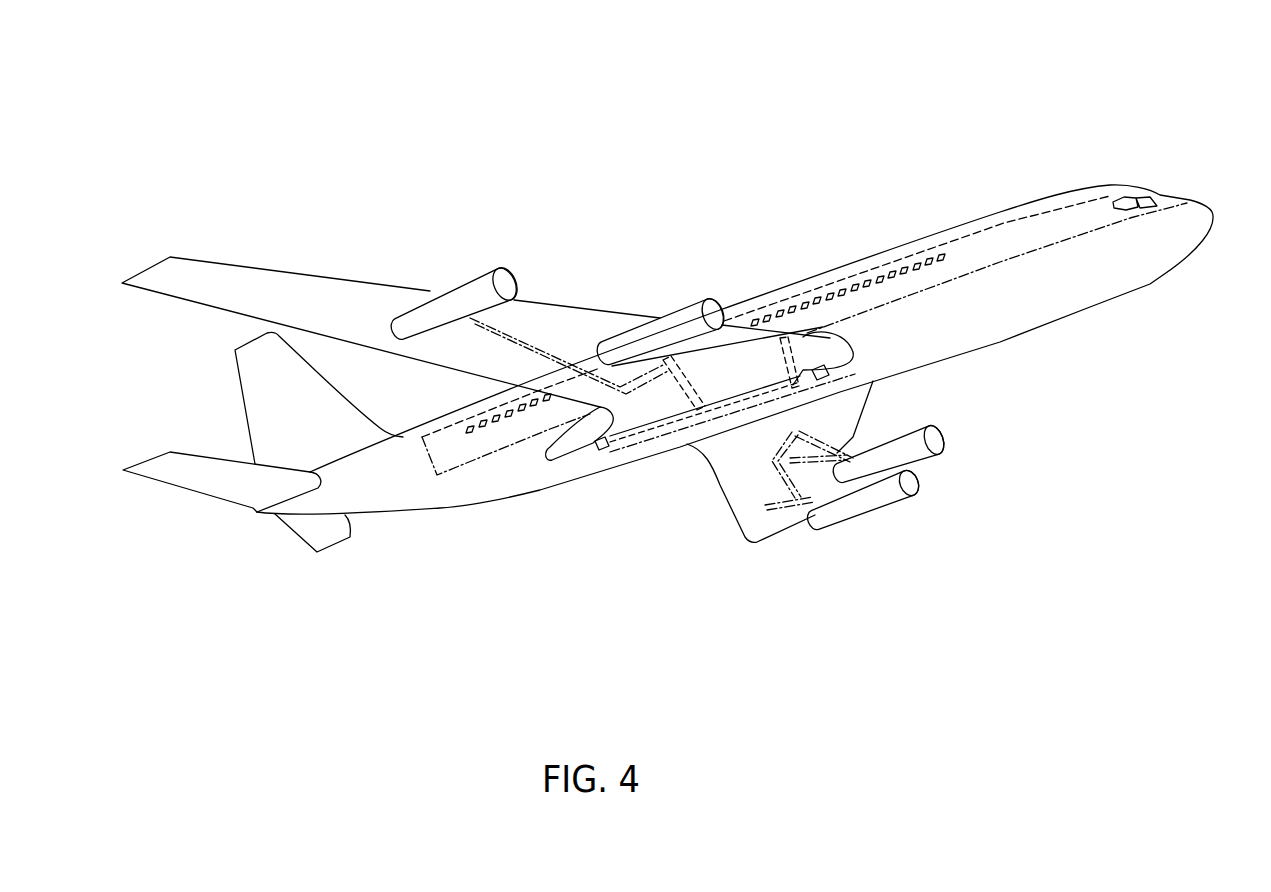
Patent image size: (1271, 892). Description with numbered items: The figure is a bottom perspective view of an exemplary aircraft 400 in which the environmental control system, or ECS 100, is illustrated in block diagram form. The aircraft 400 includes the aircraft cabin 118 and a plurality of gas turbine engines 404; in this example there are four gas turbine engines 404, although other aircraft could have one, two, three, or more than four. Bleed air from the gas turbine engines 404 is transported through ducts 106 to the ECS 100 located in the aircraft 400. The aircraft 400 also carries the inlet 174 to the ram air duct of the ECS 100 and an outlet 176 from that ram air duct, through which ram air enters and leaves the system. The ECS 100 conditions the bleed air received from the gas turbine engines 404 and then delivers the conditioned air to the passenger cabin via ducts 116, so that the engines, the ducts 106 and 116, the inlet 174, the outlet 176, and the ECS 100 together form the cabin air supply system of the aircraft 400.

The aircraft 400 is at (956, 99).
The ECS 100 is at (640, 446).
The aircraft cabin 118 is at (1043, 213).
The gas turbine engines 404 is at (518, 277).
The ducts 106 is at (522, 338).
The ducts 116 is at (780, 367).
The inlet 174 is at (823, 364).
The outlet 176 is at (593, 445).